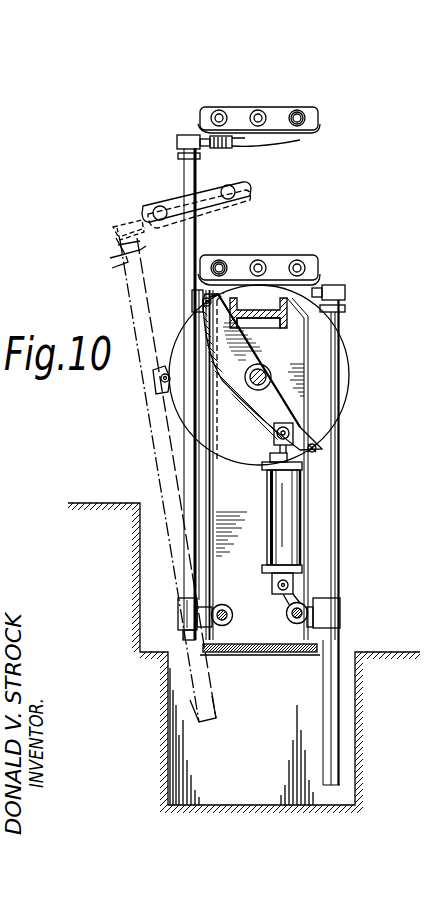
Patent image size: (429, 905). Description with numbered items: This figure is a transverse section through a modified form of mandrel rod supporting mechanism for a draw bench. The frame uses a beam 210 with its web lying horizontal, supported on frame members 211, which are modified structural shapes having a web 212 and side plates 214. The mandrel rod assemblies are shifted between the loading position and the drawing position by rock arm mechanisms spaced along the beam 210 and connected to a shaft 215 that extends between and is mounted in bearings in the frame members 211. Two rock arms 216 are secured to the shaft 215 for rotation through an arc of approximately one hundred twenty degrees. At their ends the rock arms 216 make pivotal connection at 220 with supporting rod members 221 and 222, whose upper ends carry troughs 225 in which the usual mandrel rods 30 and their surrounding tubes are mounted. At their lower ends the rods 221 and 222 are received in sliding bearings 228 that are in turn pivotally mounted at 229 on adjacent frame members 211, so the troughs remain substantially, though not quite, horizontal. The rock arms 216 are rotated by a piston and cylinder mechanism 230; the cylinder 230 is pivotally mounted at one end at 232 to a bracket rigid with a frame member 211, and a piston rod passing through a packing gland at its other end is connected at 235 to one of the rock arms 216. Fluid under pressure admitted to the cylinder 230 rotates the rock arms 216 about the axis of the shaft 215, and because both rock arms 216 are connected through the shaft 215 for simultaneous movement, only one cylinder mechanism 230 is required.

The mandrel rods 30 is at (300, 110).
The beam 210 is at (266, 312).
The frame members 211 is at (255, 627).
The web 212 is at (222, 485).
The side plates 214 is at (308, 527).
The shaft 215 is at (273, 371).
The rock arms 216 is at (252, 410).
The pivotal connection 220 is at (206, 302).
The supporting rod member 221 is at (183, 165).
The supporting rod member 222 is at (331, 577).
The troughs 225 is at (236, 122).
The sliding bearings 228 is at (180, 613).
The pivotal mounting 229 is at (287, 613).
The piston and cylinder mechanism 230 is at (285, 510).
The pivotal mounting of cylinder 232 is at (292, 588).
The piston rod connection 235 is at (302, 446).